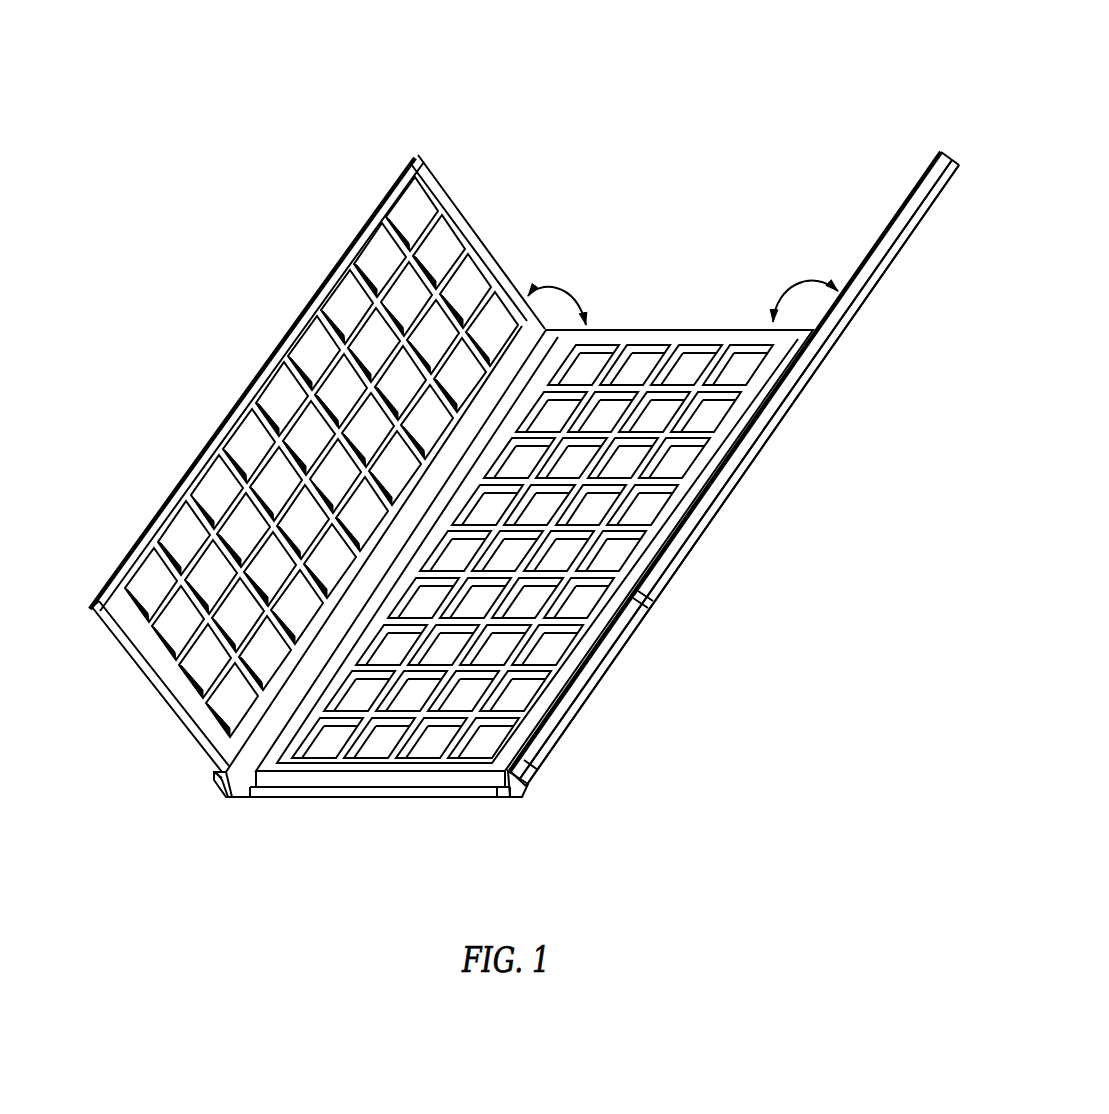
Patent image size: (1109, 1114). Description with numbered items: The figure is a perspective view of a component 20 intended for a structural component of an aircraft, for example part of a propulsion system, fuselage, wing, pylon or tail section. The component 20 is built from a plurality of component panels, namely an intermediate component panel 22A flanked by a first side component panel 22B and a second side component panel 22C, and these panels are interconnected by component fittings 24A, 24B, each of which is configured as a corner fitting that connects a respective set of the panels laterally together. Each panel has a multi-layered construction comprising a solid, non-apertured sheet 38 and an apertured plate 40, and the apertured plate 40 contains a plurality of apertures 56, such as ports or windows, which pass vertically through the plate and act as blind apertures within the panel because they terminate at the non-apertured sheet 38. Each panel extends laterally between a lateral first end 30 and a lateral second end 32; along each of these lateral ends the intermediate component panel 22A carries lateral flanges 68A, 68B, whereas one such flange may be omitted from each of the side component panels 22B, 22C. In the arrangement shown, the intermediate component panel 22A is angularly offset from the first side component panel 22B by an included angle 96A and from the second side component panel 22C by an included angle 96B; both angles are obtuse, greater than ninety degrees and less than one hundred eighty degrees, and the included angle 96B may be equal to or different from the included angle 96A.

The component 20 is at (737, 102).
The intermediate component panel 22A is at (667, 324).
The first side component panel 22B is at (449, 186).
The second side component panel 22C is at (872, 227).
The apertures 56 is at (468, 282).
The included angle 96A is at (566, 292).
The included angle 96B is at (796, 286).
The non-apertured sheet 38 is at (95, 602).
The apertured plate 40 is at (103, 597).
The lateral first end 30 is at (92, 609).
The lateral second end 32 is at (217, 797).
The lateral flange 68A is at (260, 790).
The lateral flange 68B is at (215, 778).
The component fitting 24A is at (222, 808).
The component fitting 24B is at (528, 807).